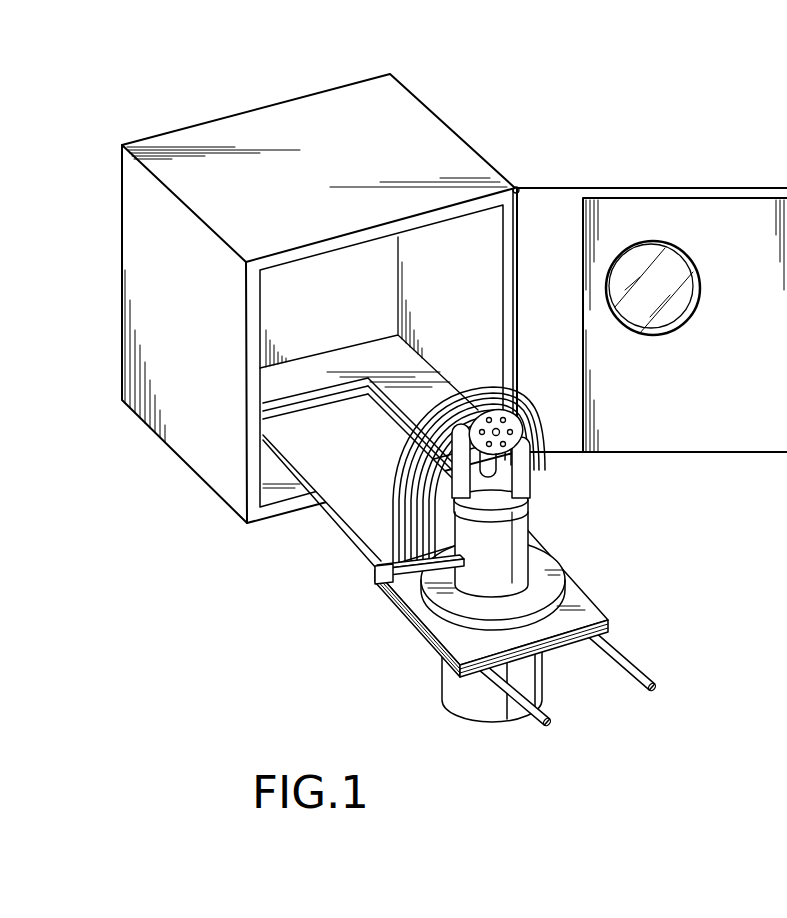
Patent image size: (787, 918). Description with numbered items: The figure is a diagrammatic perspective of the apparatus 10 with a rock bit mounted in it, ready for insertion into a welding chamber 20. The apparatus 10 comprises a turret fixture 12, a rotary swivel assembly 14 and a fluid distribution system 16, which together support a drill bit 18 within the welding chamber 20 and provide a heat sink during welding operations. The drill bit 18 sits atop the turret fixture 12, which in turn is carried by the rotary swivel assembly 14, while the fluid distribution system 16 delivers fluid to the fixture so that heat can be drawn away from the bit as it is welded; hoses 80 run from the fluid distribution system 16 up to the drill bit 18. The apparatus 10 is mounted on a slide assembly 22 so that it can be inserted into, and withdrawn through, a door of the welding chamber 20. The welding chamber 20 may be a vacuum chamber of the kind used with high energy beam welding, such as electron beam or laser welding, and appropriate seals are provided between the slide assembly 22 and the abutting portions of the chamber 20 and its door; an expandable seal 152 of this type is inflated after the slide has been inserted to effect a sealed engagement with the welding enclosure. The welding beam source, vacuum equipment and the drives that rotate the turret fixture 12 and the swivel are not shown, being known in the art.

The apparatus 10 is at (495, 531).
The turret fixture 12 is at (473, 572).
The rotary swivel assembly 14 is at (441, 652).
The fluid distribution system 16 is at (374, 580).
The drill bit 18 is at (530, 470).
The welding chamber 20 is at (437, 152).
The slide assembly 22 is at (572, 592).
The flexible hoses 80 is at (404, 500).
The expandable seal 152 is at (590, 621).